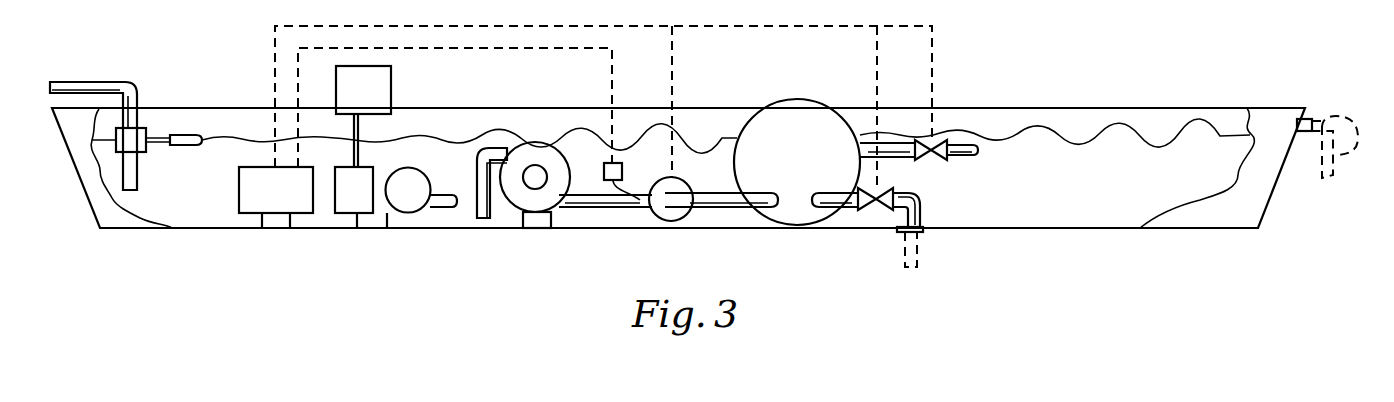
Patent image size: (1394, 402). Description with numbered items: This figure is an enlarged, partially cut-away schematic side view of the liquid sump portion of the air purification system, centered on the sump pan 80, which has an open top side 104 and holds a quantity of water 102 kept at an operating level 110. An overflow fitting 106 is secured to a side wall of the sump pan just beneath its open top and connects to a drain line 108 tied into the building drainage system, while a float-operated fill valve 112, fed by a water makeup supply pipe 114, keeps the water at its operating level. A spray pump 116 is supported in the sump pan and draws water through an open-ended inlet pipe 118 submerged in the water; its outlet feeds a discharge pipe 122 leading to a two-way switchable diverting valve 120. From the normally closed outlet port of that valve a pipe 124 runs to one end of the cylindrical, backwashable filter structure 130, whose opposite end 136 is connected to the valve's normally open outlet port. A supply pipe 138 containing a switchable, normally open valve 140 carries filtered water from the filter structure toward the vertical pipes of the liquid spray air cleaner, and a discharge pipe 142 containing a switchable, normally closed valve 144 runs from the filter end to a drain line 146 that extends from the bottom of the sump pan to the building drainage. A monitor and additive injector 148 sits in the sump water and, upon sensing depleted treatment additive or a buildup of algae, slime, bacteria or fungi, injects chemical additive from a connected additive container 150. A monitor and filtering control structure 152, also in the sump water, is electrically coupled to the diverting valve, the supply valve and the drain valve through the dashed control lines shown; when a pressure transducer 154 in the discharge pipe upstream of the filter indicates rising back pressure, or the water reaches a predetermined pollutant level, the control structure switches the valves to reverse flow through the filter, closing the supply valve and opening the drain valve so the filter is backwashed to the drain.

The sump pan 80 is at (1285, 162).
The water 102 is at (1070, 180).
The open top side 104 is at (1163, 107).
The overflow fitting 106 is at (1312, 119).
The drain line 108 is at (1335, 118).
The operating level 110 is at (1040, 132).
The float-operated fill valve 112 is at (147, 128).
The water makeup supply pipe 114 is at (90, 82).
The spray pump 116 is at (535, 155).
The inlet pipe 118 is at (477, 185).
The two-way switchable diverting valve 120 is at (690, 218).
The discharge pipe 122 is at (590, 207).
The pipe 124 is at (705, 192).
The backwashable filter structure 130 is at (812, 101).
The end of filter structure 136 is at (818, 173).
The supply pipe 138 is at (896, 142).
The normally open valve 140 is at (940, 158).
The discharge pipe 142 is at (845, 208).
The normally closed valve 144 is at (878, 212).
The drain line 146 is at (936, 258).
The monitor and additive injector 148 is at (352, 205).
The additive container 150 is at (383, 101).
The monitor and filtering control structure 152 is at (239, 190).
The pressure transducer 154 is at (638, 207).